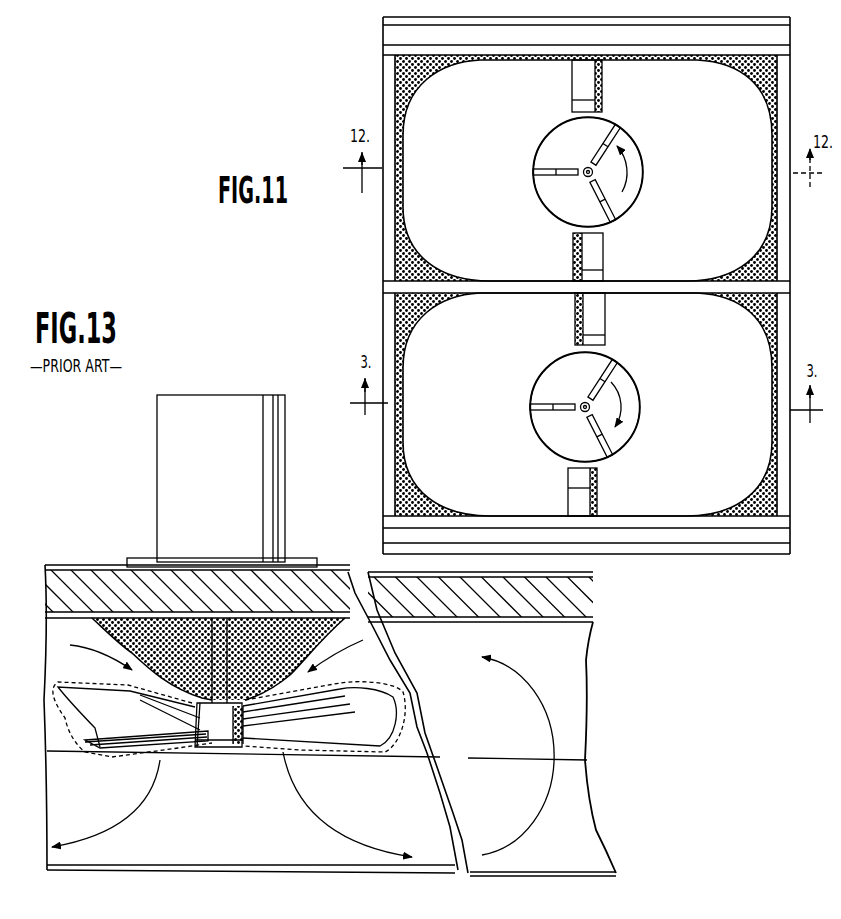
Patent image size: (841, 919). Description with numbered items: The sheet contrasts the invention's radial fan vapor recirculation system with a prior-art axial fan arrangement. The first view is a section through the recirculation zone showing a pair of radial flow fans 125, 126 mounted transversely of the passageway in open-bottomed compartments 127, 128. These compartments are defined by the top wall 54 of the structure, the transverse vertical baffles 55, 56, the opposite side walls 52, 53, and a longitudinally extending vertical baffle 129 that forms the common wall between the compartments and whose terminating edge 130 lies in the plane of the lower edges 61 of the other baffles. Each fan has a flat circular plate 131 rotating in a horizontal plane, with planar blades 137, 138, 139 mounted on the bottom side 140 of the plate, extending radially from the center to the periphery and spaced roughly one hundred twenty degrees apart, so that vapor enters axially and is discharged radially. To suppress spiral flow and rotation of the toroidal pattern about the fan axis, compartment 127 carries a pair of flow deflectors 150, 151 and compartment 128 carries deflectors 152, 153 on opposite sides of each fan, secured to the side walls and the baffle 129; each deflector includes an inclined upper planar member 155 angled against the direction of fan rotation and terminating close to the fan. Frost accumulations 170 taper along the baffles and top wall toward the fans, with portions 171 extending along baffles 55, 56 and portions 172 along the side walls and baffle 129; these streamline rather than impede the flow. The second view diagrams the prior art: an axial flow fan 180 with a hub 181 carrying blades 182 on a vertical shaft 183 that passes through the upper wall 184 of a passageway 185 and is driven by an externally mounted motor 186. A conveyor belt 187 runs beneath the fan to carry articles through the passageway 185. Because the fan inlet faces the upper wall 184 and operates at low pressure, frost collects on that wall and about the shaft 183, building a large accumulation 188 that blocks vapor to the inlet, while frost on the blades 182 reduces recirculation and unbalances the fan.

In FIG. 11, the side wall 52 is at (643, 522).
In FIG. 11, the side wall 53 is at (700, 55).
In FIG. 11, the top wall 54 is at (765, 148).
In FIG. 11, the baffle 55 is at (384, 327).
In FIG. 11, the baffle 56 is at (790, 268).
In FIG. 11, the lower edges of the baffles 61 is at (384, 104).
In FIG. 11, the radial flow fan 125 is at (648, 418).
In FIG. 11, the radial flow fan 126 is at (650, 165).
In FIG. 11, the compartment 127 is at (481, 413).
In FIG. 11, the compartment 128 is at (476, 171).
In FIG. 11, the baffle 129 is at (384, 288).
In FIG. 11, the terminating edge 130 is at (492, 291).
In FIG. 11, the circular plate 131 is at (538, 158).
In FIG. 11, the blade 137 is at (547, 176).
In FIG. 11, the blade 138 is at (620, 130).
In FIG. 11, the blade 139 is at (615, 210).
In FIG. 11, the bottom side of the plate 140 is at (558, 203).
In FIG. 11, the flow deflector 150 is at (565, 500).
In FIG. 11, the flow deflector 151 is at (607, 312).
In FIG. 11, the flow deflector 152 is at (606, 248).
In FIG. 11, the flow deflector 153 is at (570, 80).
In FIG. 11, the upper planar member 155 is at (582, 100).
In FIG. 11, the frost accumulation 170 is at (421, 78).
In FIG. 11, the frost accumulation portion 171 is at (405, 127).
In FIG. 11, the frost accumulation portion 172 is at (478, 65).
In FIG. 13, the axial flow fan 180 is at (240, 750).
In FIG. 13, the hub 181 is at (210, 748).
In FIG. 13, the blades 182 is at (113, 755).
In FIG. 13, the shaft 183 is at (312, 565).
In FIG. 13, the upper wall 184 is at (85, 565).
In FIG. 13, the passageway 185 is at (486, 715).
In FIG. 13, the motor 186 is at (285, 500).
In FIG. 13, the conveyor belt 187 is at (243, 866).
In FIG. 13, the frost accumulation 188 is at (96, 636).